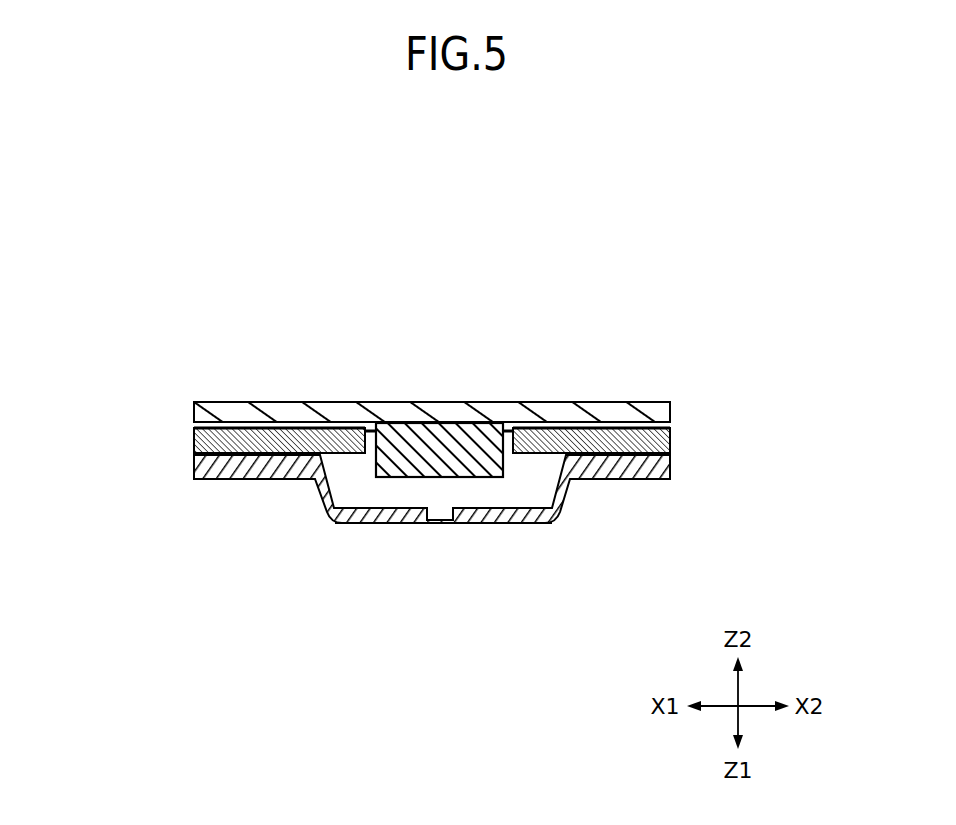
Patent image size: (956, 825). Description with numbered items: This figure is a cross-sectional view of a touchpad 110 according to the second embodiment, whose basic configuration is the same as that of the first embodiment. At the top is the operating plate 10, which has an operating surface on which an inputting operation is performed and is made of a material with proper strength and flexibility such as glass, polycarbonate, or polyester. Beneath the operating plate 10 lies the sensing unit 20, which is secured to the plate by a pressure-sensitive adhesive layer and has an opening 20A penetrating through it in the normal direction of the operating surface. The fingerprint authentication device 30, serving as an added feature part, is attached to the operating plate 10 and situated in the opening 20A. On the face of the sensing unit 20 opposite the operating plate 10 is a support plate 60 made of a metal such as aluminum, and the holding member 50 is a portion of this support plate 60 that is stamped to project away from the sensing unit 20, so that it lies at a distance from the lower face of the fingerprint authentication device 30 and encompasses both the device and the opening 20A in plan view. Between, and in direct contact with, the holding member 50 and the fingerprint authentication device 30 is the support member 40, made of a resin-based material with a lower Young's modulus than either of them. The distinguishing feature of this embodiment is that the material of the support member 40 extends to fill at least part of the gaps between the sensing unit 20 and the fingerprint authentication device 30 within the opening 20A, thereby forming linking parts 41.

The touchpad 110 is at (156, 266).
The operating plate 10 is at (641, 410).
The sensing unit 20 is at (668, 442).
The opening 20A is at (370, 437).
The fingerprint authentication device 30 is at (424, 463).
The support member 40 is at (467, 495).
The linking parts 41 is at (512, 462).
The holding member 50 is at (330, 513).
The support plate 60 is at (665, 468).